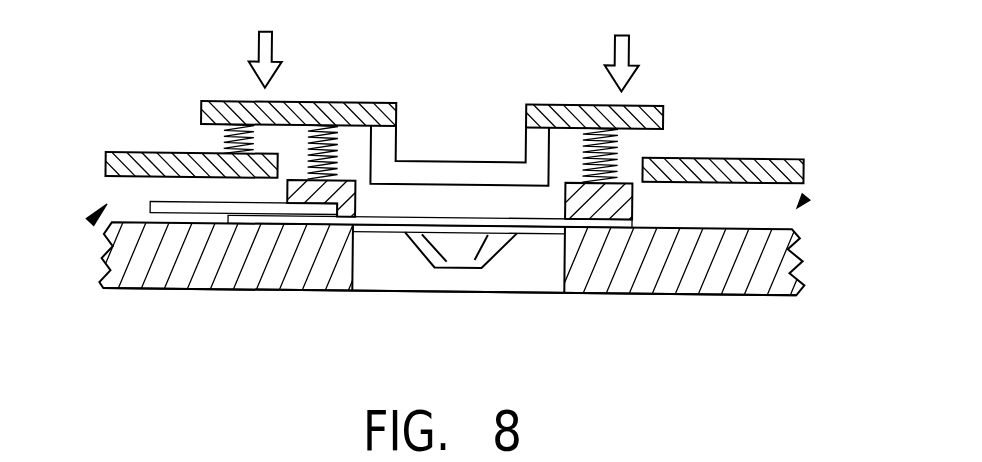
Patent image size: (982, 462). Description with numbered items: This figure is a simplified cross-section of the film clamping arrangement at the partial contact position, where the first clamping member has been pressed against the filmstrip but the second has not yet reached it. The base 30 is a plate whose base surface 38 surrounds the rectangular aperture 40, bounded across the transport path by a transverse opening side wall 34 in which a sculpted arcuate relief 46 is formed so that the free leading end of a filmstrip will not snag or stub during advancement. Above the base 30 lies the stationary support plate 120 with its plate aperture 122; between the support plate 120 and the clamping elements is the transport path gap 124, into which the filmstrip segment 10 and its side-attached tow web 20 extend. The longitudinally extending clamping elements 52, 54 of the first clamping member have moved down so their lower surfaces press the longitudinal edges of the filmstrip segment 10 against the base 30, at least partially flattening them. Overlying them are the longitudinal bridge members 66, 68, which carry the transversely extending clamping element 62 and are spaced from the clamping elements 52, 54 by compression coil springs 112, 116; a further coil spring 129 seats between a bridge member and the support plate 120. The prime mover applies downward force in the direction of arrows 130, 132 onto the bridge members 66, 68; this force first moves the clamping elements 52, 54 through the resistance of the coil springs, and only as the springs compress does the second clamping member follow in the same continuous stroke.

The filmstrip segment 10 is at (392, 218).
The tow web 20 is at (167, 203).
The base 30 is at (728, 283).
The transverse opening side wall 34 is at (447, 282).
The base surface 38 is at (787, 230).
The aperture 40 is at (541, 316).
The sculpted arcuate relief 46 is at (425, 258).
The longitudinally extending clamping element 52 is at (632, 197).
The longitudinally extending clamping element 54 is at (350, 192).
The transversely extending clamping element 62 is at (473, 162).
The longitudinal bridge member 66 is at (560, 102).
The longitudinal bridge member 68 is at (292, 102).
The compression coil spring 112 is at (617, 133).
The compression coil spring 116 is at (375, 92).
The support plate 120 is at (117, 153).
The plate aperture 122 is at (812, 192).
The transport path gap 124 is at (90, 226).
The coil spring 129 is at (220, 147).
The arrow 130 is at (613, 37).
The arrow 132 is at (258, 32).